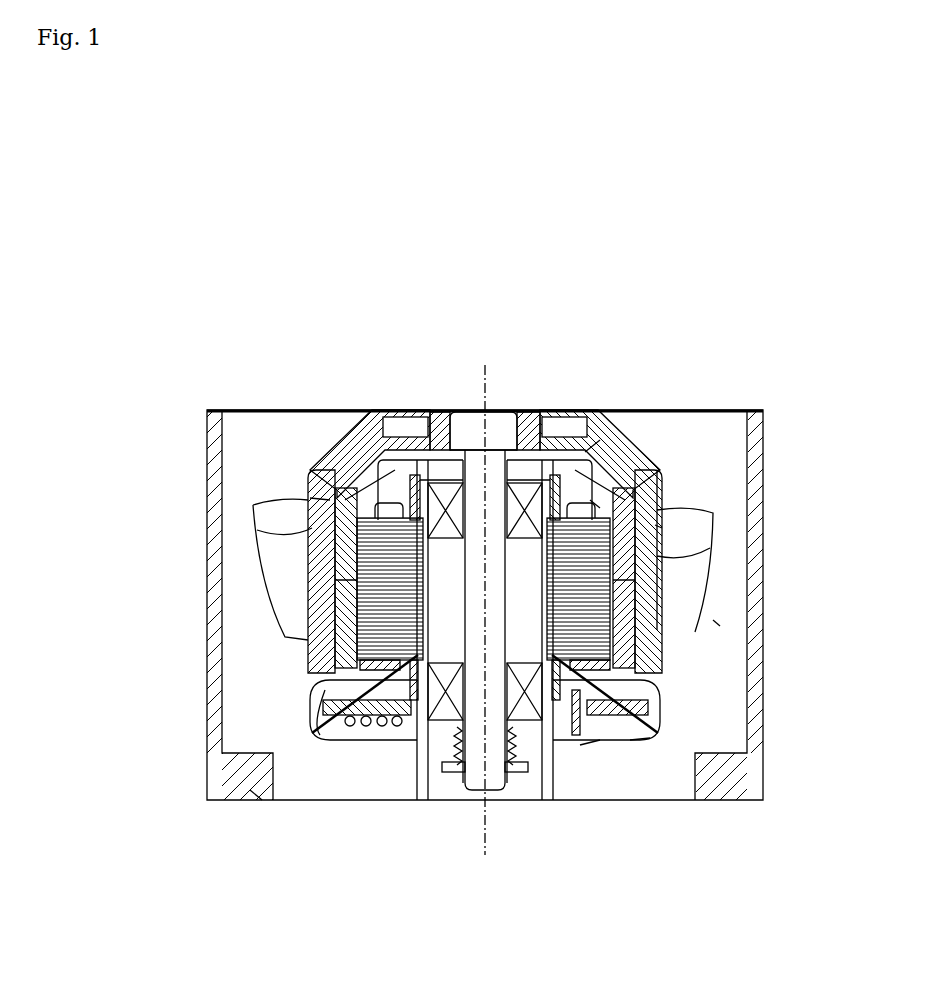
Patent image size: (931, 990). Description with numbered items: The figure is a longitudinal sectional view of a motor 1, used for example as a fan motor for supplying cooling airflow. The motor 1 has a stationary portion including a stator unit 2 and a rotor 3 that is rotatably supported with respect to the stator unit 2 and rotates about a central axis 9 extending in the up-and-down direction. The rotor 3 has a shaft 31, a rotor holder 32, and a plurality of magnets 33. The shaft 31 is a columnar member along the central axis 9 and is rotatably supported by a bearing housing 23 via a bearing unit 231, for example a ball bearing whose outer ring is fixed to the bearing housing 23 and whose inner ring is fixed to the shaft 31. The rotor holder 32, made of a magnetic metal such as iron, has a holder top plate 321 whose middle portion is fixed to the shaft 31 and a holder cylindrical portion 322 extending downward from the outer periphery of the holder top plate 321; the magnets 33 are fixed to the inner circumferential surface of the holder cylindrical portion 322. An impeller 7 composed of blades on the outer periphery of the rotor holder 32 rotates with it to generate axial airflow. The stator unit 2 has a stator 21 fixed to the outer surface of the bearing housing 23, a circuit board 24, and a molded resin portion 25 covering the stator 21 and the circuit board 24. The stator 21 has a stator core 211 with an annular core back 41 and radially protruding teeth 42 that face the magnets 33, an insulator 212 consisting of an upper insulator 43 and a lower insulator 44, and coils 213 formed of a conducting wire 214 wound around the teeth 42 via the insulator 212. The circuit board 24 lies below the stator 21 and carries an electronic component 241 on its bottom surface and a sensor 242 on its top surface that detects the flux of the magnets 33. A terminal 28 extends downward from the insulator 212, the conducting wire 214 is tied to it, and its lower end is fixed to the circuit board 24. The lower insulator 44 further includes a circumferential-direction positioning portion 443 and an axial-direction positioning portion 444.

The motor 1 is at (414, 163).
The stator unit 2 is at (397, 760).
The rotor 3 is at (296, 446).
The impeller 7 is at (692, 575).
The central axis 9 is at (485, 377).
The stator 21 is at (337, 535).
The bearing housing 23 is at (546, 800).
The circuit board 24 is at (648, 722).
The molded resin portion 25 is at (256, 800).
The terminal 28 is at (600, 748).
The shaft 31 is at (470, 805).
The rotor holder 32 is at (331, 427).
The magnets 33 is at (660, 527).
The core back 41 is at (345, 572).
The teeth 42 is at (345, 612).
The upper insulator 43 is at (600, 506).
The lower insulator 44 is at (642, 692).
The stator core 211 is at (361, 589).
The insulator 212 is at (587, 458).
The coils 213 is at (310, 498).
The conducting wire 214 is at (640, 742).
The bearing unit 231 is at (421, 805).
The electronic component 241 is at (308, 742).
The sensor 242 is at (660, 738).
The holder top plate 321 is at (566, 442).
The holder cylindrical portion 322 is at (718, 626).
The circumferential-direction positioning portion 443 is at (578, 750).
The axial-direction positioning portion 444 is at (322, 714).